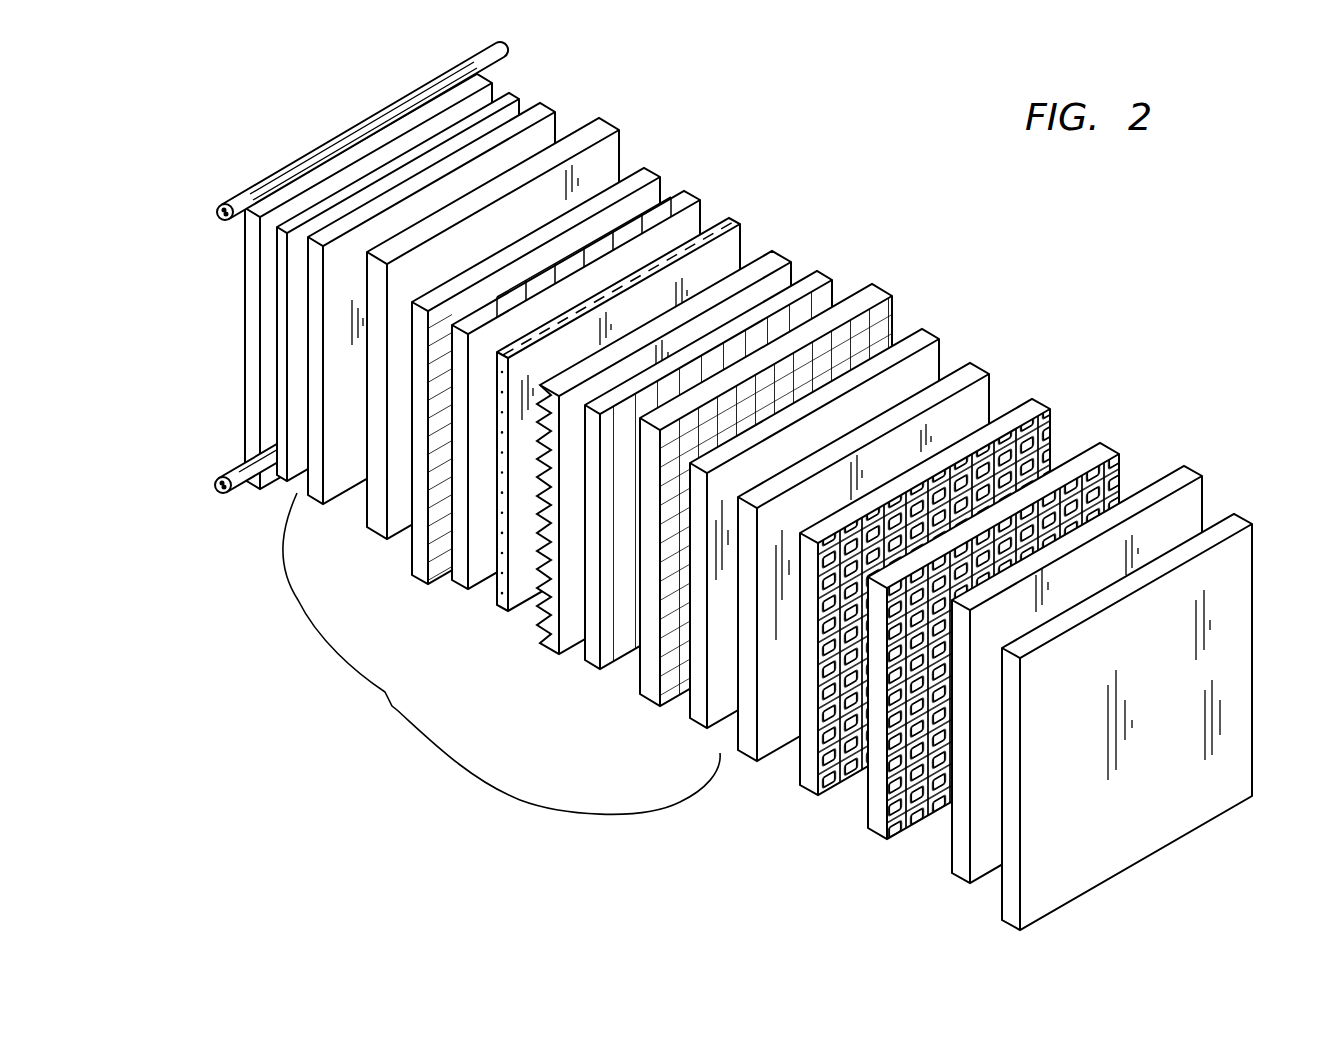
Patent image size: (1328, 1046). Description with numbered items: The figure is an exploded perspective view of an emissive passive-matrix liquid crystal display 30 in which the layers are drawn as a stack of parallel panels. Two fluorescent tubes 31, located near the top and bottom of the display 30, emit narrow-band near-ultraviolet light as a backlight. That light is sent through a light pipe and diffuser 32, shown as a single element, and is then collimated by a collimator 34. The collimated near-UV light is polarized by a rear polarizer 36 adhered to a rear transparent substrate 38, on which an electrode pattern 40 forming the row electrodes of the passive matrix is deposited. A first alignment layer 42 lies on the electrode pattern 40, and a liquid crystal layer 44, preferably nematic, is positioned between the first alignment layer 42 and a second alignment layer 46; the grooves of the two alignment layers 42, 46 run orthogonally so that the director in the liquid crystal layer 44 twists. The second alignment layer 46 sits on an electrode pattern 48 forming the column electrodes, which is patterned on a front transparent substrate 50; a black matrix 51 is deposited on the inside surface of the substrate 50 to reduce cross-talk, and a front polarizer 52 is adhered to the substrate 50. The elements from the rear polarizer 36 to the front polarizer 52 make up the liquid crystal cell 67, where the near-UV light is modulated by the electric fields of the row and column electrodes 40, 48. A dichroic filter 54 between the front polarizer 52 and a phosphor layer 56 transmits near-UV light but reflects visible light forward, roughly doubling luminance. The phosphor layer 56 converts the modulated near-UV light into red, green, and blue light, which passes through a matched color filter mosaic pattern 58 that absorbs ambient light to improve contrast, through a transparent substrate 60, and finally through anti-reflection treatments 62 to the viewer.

The liquid crystal display 30 is at (736, 481).
The fluorescent tubes 31 is at (483, 52).
The light pipe and diffuser 32 is at (493, 80).
The collimator 34 is at (287, 482).
The rear polarizer 36 is at (555, 108).
The rear transparent substrate 38 is at (610, 130).
The electrode pattern 40 is at (660, 178).
The first alignment layer 42 is at (700, 200).
The liquid crystal layer 44 is at (741, 224).
The second alignment layer 46 is at (791, 262).
The electrode pattern 48 is at (832, 278).
The front transparent substrate 50 is at (778, 517).
The black matrix 51 is at (892, 294).
The front polarizer 52 is at (707, 728).
The dichroic filter 54 is at (989, 374).
The phosphor layer 56 is at (1050, 409).
The color filter mosaic pattern 58 is at (1119, 454).
The transparent substrate 60 is at (1202, 476).
The anti-reflection treatments 62 is at (1252, 524).
The liquid crystal cell 67 is at (501, 653).